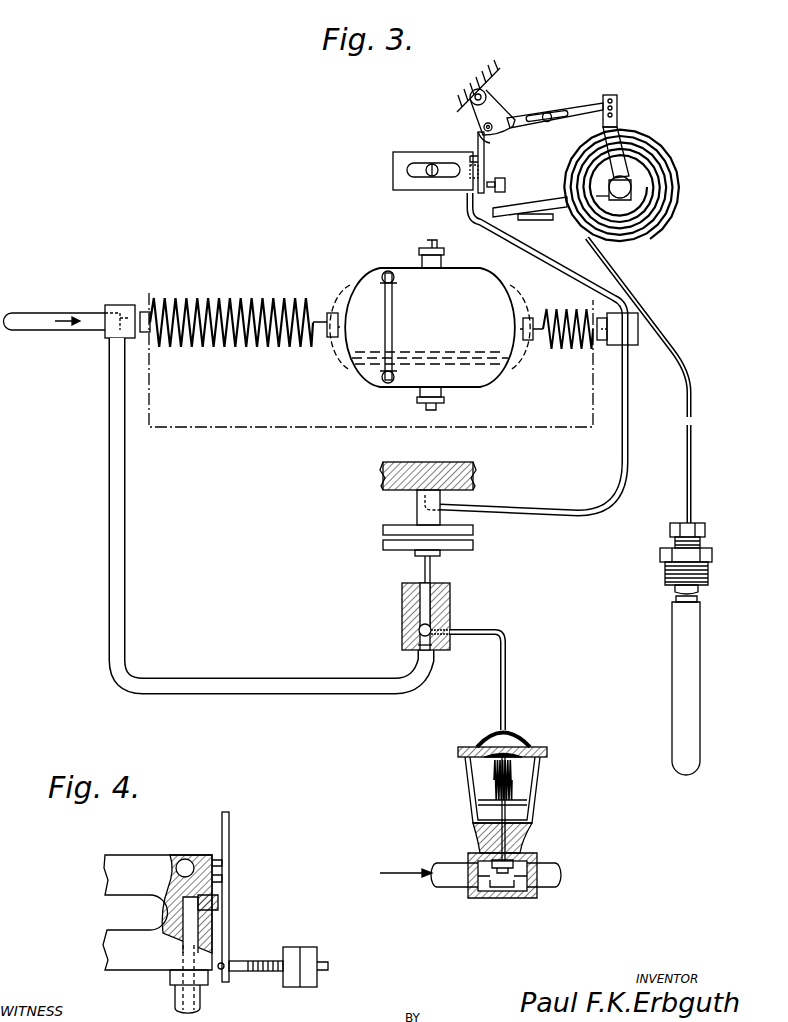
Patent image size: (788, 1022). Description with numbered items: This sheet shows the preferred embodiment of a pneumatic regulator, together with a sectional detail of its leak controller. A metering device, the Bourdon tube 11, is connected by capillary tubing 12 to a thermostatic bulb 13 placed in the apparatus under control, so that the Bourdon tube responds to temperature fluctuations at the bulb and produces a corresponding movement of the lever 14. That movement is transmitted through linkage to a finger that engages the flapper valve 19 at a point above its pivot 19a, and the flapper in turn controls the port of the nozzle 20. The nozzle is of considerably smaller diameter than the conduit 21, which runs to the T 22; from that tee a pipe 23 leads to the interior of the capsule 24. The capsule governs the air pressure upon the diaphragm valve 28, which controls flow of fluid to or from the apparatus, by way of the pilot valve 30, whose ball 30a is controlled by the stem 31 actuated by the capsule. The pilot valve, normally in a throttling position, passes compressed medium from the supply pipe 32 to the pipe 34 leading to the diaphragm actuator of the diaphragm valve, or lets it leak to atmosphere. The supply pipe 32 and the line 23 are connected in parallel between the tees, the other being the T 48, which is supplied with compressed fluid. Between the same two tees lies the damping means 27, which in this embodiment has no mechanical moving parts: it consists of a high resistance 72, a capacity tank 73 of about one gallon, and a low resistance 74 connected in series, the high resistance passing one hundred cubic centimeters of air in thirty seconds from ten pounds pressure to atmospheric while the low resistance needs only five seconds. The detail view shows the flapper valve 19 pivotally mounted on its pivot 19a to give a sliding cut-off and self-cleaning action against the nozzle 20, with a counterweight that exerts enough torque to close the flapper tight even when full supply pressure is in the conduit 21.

In FIG. 3, the Bourdon tube 11 is at (677, 175).
In FIG. 3, the capillary tubing 12 is at (690, 381).
In FIG. 3, the thermostatic bulb 13 is at (700, 688).
In FIG. 3, the lever 14 is at (610, 110).
In FIG. 3, the flapper valve 19 is at (486, 174).
In FIG. 4, the flapper valve 19 is at (232, 922).
In FIG. 4, the pivot 19a is at (188, 860).
In FIG. 3, the nozzle 20 is at (472, 172).
In FIG. 4, the nozzle 20 is at (218, 898).
In FIG. 3, the conduit 21 is at (556, 262).
In FIG. 4, the conduit 21 is at (200, 1008).
In FIG. 3, the T 22 is at (648, 350).
In FIG. 3, the pipe 23 is at (620, 452).
In FIG. 3, the capsule 24 is at (476, 545).
In FIG. 3, the damping means 27 is at (265, 428).
In FIG. 3, the diaphragm valve 28 is at (538, 788).
In FIG. 3, the pilot valve 30 is at (402, 616).
In FIG. 3, the ball 30a is at (438, 622).
In FIG. 3, the stem 31 is at (438, 568).
In FIG. 3, the supply pipe 32 is at (128, 530).
In FIG. 3, the pipe 34 is at (507, 656).
In FIG. 3, the T 48 is at (128, 304).
In FIG. 3, the high resistance 72 is at (262, 296).
In FIG. 3, the capacity tank 73 is at (430, 325).
In FIG. 3, the low resistance 74 is at (546, 350).